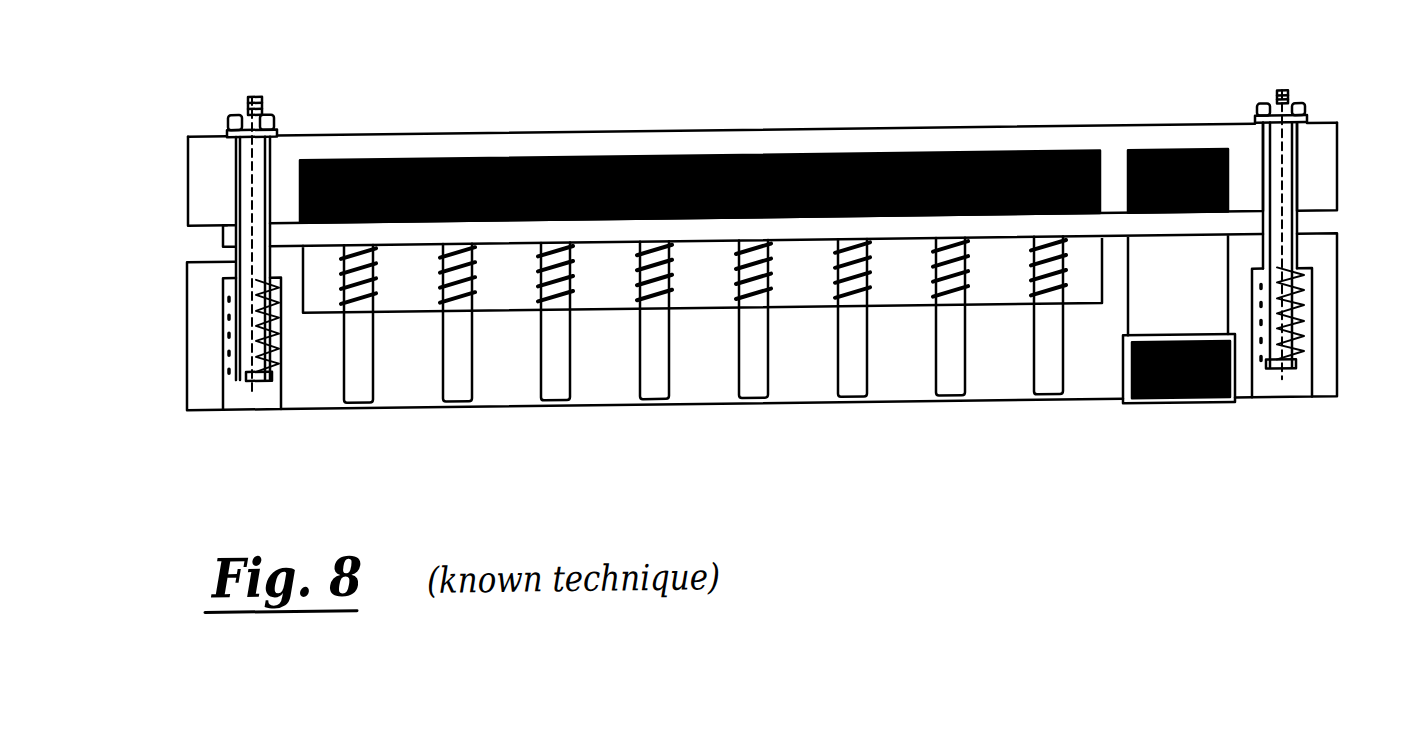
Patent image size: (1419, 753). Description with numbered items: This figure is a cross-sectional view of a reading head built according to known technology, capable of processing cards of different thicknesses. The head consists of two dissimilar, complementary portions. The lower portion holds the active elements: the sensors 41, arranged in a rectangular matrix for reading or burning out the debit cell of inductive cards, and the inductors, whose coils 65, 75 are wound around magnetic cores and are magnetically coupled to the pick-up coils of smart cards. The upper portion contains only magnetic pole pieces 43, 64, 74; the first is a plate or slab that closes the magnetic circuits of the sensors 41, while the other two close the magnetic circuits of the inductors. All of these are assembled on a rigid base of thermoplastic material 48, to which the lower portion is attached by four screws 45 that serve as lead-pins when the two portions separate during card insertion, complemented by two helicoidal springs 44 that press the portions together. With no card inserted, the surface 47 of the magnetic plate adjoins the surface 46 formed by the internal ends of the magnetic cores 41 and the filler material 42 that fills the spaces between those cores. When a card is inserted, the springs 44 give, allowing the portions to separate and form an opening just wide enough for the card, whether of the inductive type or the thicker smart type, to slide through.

The sensors 41 is at (657, 397).
The filler material 42 is at (503, 284).
The magnetic pole piece 43 is at (787, 160).
The helicoidal springs 44 is at (288, 352).
The screws 45 is at (242, 111).
The surface 46 is at (223, 246).
The surface 47 is at (188, 229).
The rigid base of thermoplastic material 48 is at (448, 152).
The magnetic pole piece 64 is at (1114, 140).
The magnetic pole piece 74 is at (1127, 167).
The coil 65 is at (1142, 411).
The coil 75 is at (1203, 441).